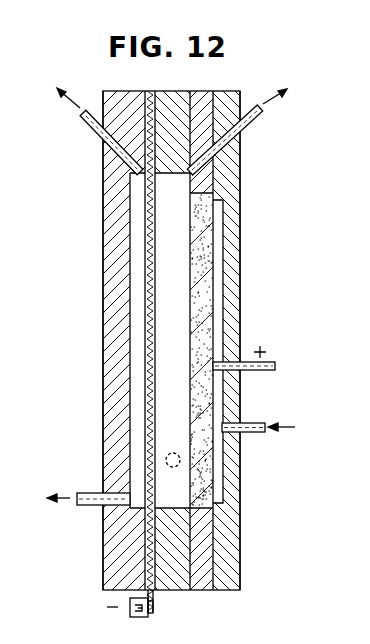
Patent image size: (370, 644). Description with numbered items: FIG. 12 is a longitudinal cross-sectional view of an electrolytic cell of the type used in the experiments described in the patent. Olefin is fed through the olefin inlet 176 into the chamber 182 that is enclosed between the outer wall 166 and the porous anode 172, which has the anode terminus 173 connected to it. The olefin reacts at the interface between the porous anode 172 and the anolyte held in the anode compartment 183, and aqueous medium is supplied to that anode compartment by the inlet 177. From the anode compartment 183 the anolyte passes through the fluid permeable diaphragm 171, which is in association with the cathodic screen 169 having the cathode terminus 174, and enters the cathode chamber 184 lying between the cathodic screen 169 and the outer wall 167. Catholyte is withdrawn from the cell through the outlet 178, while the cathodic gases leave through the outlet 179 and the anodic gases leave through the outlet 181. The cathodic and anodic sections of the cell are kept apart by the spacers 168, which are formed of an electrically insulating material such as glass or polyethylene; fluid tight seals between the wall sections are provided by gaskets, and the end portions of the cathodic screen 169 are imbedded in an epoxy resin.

The spacers 168 is at (168, 97).
The outlet 179 is at (88, 125).
The outlet 181 is at (255, 118).
The cathodic screen 169 is at (147, 238).
The anode compartment 183 is at (186, 260).
The outer wall 166 is at (233, 258).
The outer wall 167 is at (108, 315).
The fluid permeable diaphragm 171 is at (155, 308).
The chamber 182 is at (218, 322).
The cathode chamber 184 is at (137, 353).
The porous anode 172 is at (200, 343).
The anode terminus 173 is at (275, 366).
The olefin inlet 176 is at (255, 432).
The inlet 177 is at (170, 452).
The outlet 178 is at (86, 506).
The cathode terminus 174 is at (129, 613).